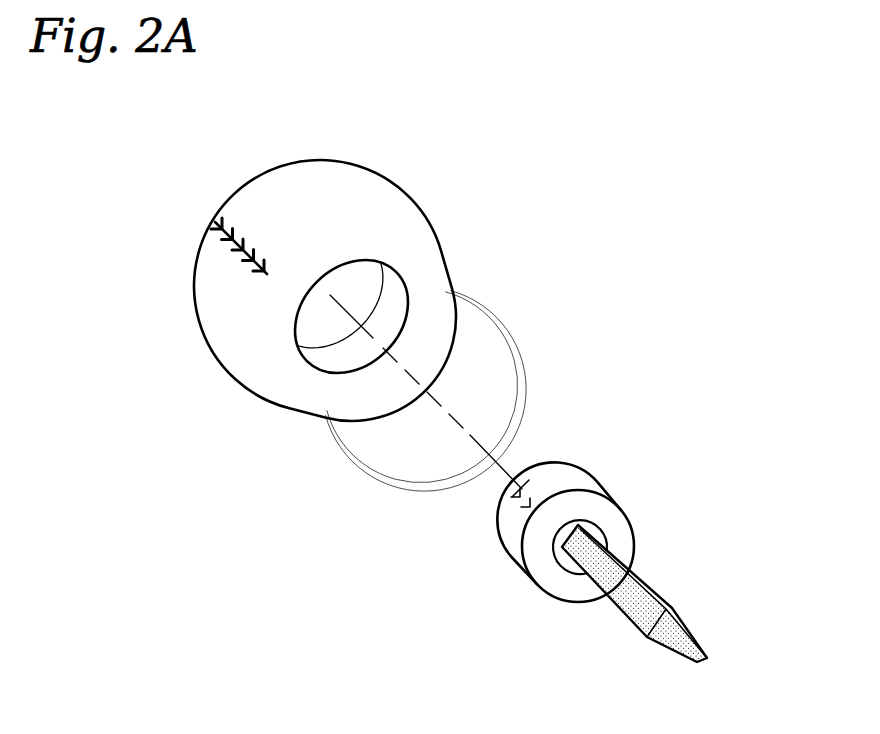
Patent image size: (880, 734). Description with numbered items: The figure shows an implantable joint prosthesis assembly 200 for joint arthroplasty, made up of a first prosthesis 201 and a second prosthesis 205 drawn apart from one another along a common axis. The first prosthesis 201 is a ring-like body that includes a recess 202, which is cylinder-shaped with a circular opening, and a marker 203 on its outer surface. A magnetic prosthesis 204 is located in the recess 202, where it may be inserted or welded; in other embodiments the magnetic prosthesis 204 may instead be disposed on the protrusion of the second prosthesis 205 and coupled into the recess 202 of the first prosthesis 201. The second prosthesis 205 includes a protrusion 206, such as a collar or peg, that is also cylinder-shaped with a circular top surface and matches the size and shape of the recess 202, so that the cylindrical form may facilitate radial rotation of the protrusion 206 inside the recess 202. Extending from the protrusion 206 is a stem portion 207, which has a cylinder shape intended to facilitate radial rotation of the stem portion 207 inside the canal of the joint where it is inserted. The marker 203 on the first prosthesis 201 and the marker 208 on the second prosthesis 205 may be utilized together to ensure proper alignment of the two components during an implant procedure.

The joint prosthesis assembly 200 is at (657, 177).
The first prosthesis 201 is at (413, 177).
The recess 202 is at (407, 323).
The marker 203 is at (230, 223).
The magnetic prosthesis 204 is at (320, 328).
The second prosthesis 205 is at (623, 470).
The protrusion 206 is at (585, 462).
The stem portion 207 is at (667, 605).
The marker 208 is at (510, 505).